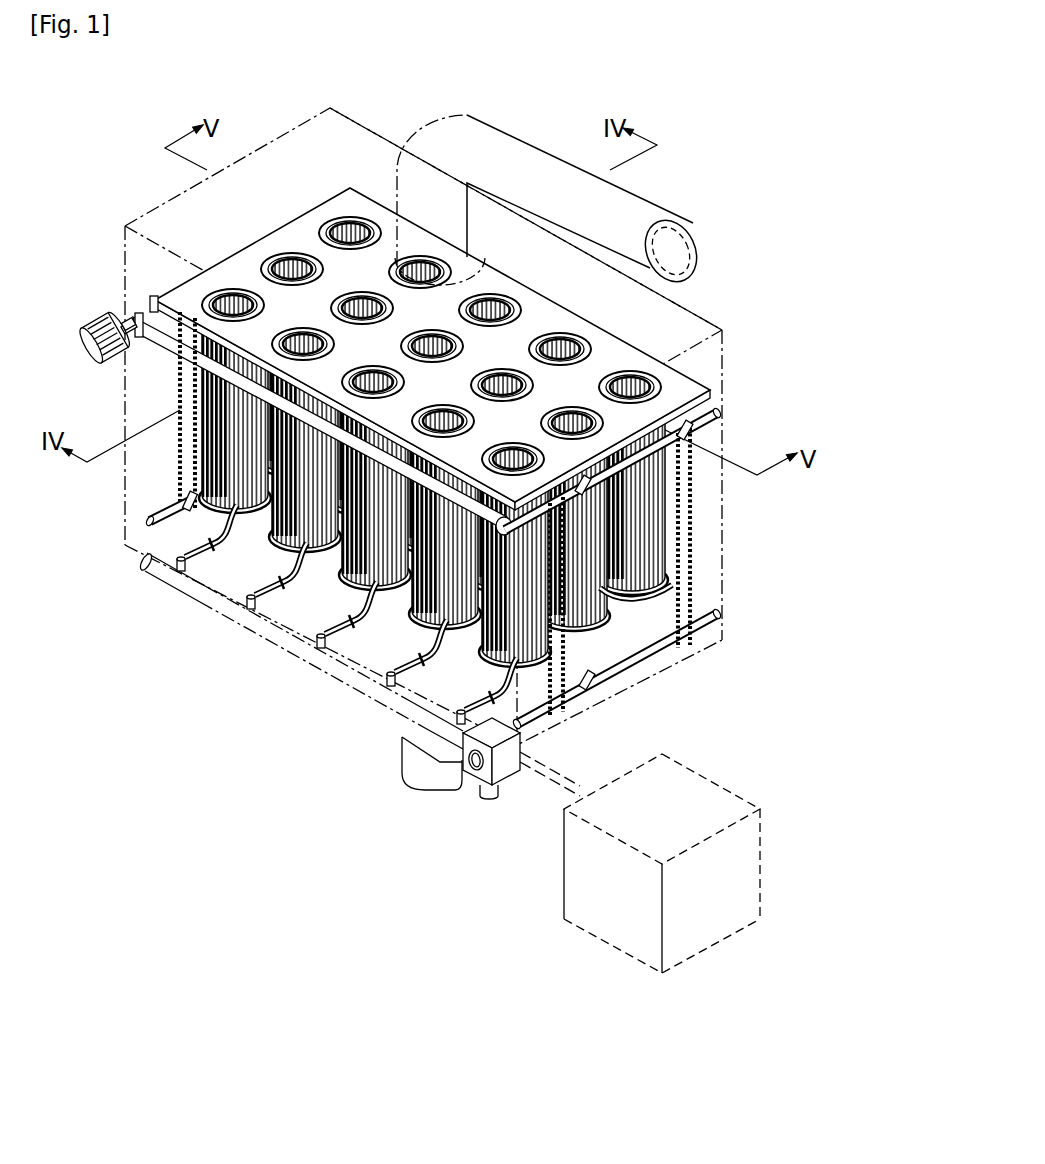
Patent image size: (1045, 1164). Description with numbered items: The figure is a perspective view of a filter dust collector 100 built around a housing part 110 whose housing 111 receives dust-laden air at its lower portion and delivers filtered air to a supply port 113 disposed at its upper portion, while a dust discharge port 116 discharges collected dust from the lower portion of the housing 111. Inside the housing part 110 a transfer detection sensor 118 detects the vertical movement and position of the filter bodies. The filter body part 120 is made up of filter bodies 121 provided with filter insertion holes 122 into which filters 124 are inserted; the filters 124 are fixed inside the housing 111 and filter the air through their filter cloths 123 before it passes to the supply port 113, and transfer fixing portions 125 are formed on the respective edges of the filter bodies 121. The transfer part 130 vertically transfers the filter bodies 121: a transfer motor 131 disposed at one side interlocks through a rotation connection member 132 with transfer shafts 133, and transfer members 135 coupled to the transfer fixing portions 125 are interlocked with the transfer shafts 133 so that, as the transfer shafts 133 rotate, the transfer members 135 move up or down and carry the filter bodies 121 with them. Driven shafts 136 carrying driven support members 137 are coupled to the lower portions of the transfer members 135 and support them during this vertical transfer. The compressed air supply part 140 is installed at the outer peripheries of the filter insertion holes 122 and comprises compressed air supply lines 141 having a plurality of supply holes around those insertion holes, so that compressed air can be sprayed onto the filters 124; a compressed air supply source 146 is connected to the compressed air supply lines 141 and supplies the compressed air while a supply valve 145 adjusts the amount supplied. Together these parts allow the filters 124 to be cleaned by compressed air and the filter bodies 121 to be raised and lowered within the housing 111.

The filter dust collector 100 is at (686, 116).
The housing part 110 is at (706, 318).
The housing 111 is at (686, 310).
The supply port 113 is at (662, 212).
The dust discharge port 116 is at (402, 760).
The transfer detection sensor 118 is at (665, 487).
The filter body part 120 is at (618, 633).
The filter body 121 is at (455, 717).
The filter insertion hole 122 is at (658, 560).
The filter cloth 123 is at (664, 517).
The filter 124 is at (660, 385).
The transfer fixing portion 125 is at (645, 603).
The transfer part 130 is at (80, 322).
The transfer motor 131 is at (136, 320).
The rotation connection member 132 is at (133, 349).
The transfer shaft 133 is at (152, 298).
The transfer member 135 is at (178, 478).
The driven shaft 136 is at (160, 572).
The driven support member 137 is at (150, 514).
The compressed air supply part 140 is at (455, 660).
The compressed air supply line 141 is at (395, 612).
The supply valve 145 is at (476, 768).
The compressed air supply source 146 is at (570, 870).